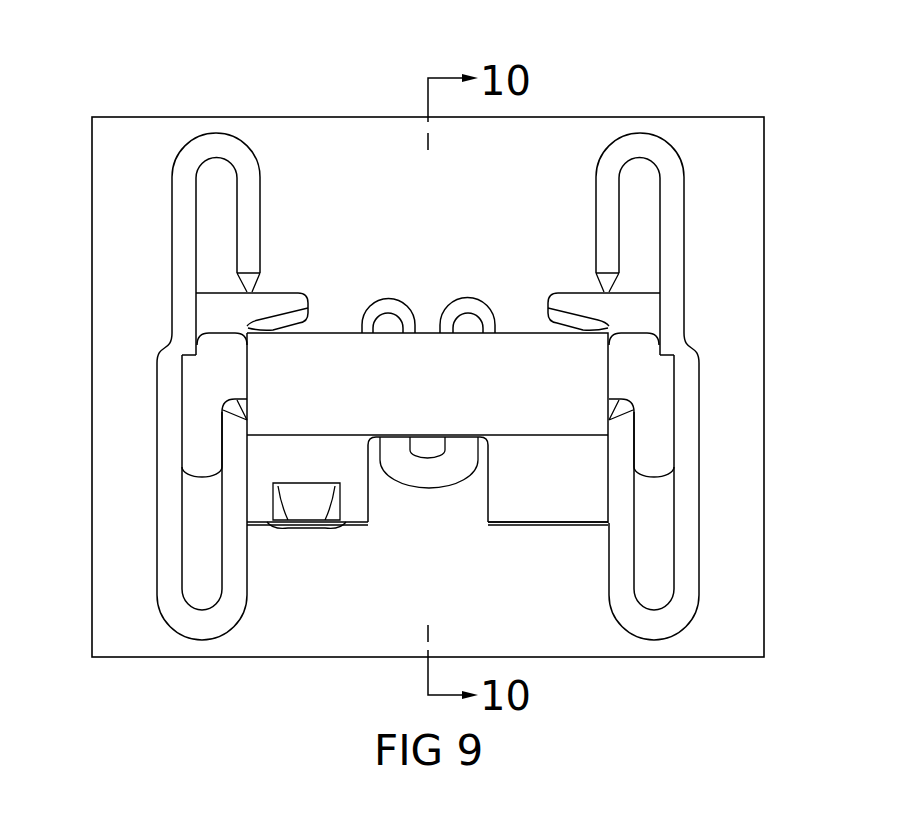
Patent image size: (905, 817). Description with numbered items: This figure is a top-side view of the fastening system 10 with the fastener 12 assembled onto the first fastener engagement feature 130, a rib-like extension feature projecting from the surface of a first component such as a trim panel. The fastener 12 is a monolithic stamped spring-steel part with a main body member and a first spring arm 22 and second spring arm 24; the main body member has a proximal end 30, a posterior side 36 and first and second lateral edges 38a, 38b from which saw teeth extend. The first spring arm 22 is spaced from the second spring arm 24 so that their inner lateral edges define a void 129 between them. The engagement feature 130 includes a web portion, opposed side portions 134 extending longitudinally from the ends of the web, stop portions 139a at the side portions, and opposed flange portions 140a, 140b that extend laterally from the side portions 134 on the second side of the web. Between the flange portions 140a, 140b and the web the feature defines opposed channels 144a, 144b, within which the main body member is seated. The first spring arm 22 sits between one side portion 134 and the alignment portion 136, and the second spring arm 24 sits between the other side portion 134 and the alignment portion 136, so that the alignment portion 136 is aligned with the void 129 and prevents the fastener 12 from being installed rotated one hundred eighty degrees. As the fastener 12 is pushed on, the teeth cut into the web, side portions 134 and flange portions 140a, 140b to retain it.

The fastening system 10 is at (686, 85).
The first fastener engagement feature 130 is at (130, 152).
The flange portion 140a is at (283, 305).
The flange portion 140b is at (568, 307).
The channel 144a is at (332, 328).
The channel 144b is at (527, 318).
The fastener 12 is at (233, 372).
The proximal end 30 is at (578, 373).
The posterior side 36 is at (506, 330).
The first lateral edge 38a is at (386, 318).
The second lateral edge 38b is at (468, 318).
The side portion 134 is at (675, 486).
The stop portion 139a is at (203, 587).
The first spring arm 22 is at (357, 508).
The alignment portion 136 is at (425, 450).
The void 129 is at (394, 529).
The second spring arm 24 is at (527, 507).